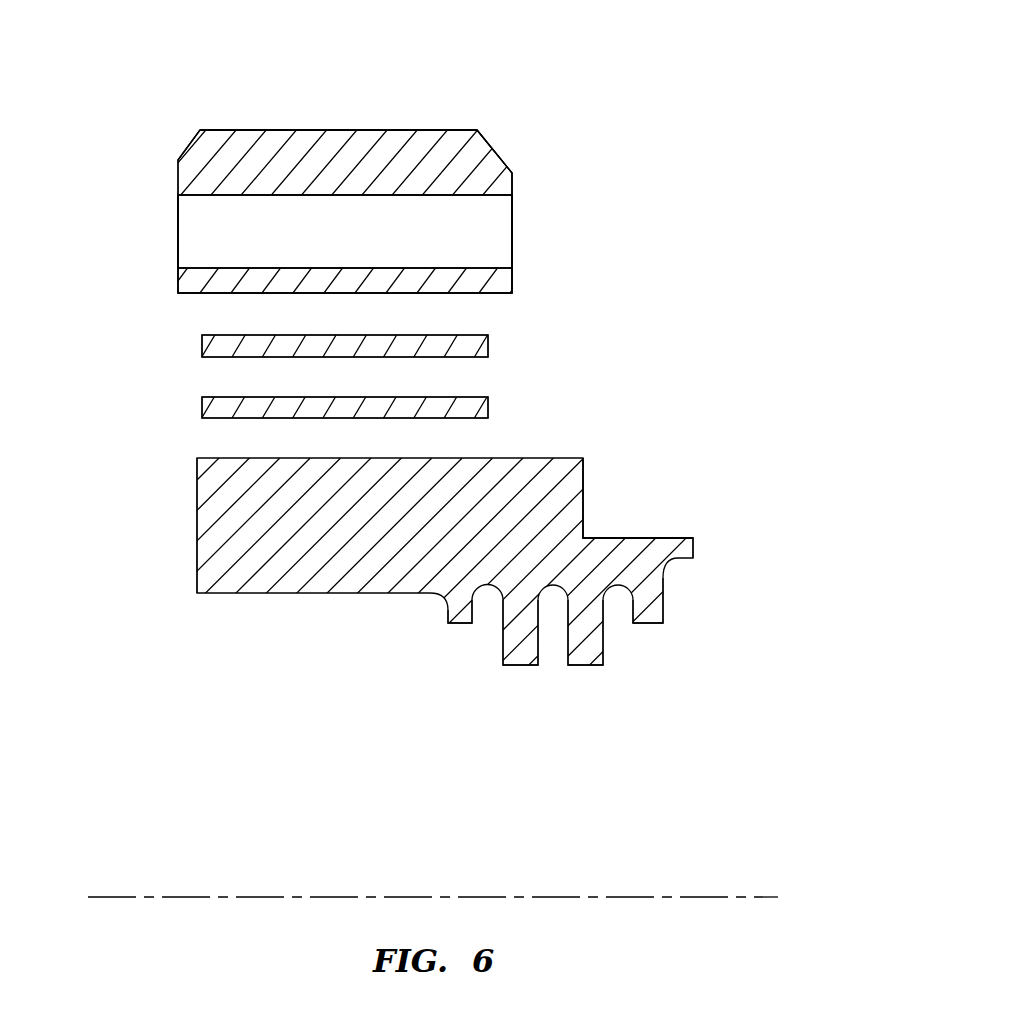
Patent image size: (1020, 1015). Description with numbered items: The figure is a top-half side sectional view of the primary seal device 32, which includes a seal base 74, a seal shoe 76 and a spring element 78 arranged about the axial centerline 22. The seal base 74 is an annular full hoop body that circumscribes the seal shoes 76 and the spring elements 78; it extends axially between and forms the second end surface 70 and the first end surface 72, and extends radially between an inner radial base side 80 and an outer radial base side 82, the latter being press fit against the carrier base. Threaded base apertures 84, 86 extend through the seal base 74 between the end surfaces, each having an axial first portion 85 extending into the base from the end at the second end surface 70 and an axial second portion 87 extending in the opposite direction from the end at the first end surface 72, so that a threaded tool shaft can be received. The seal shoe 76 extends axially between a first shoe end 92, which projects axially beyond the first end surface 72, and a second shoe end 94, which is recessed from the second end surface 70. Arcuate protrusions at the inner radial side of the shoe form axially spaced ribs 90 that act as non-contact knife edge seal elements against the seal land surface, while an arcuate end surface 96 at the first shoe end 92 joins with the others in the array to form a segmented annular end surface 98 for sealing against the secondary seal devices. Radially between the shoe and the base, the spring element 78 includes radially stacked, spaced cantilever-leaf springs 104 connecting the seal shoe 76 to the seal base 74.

The axial centerline 22 is at (757, 895).
The primary seal device 32 is at (626, 84).
The second end surface 70 is at (178, 160).
The first end surface 72 is at (512, 185).
The seal base 74 is at (381, 128).
The seal shoe 76 is at (192, 565).
The spring element 78 is at (505, 375).
The inner radial base side 80 is at (190, 294).
The outer radial base side 82 is at (300, 130).
The first base aperture 84 is at (382, 247).
The axial first portion 85 is at (224, 236).
The second base aperture 86 is at (345, 231).
The axial second portion 87 is at (450, 238).
The rib 90 is at (456, 623).
The first shoe end 92 is at (695, 548).
The second shoe end 94 is at (197, 535).
The arcuate end surface 96 is at (585, 490).
The annular end surface 98 is at (644, 498).
The spring 104 is at (203, 345).